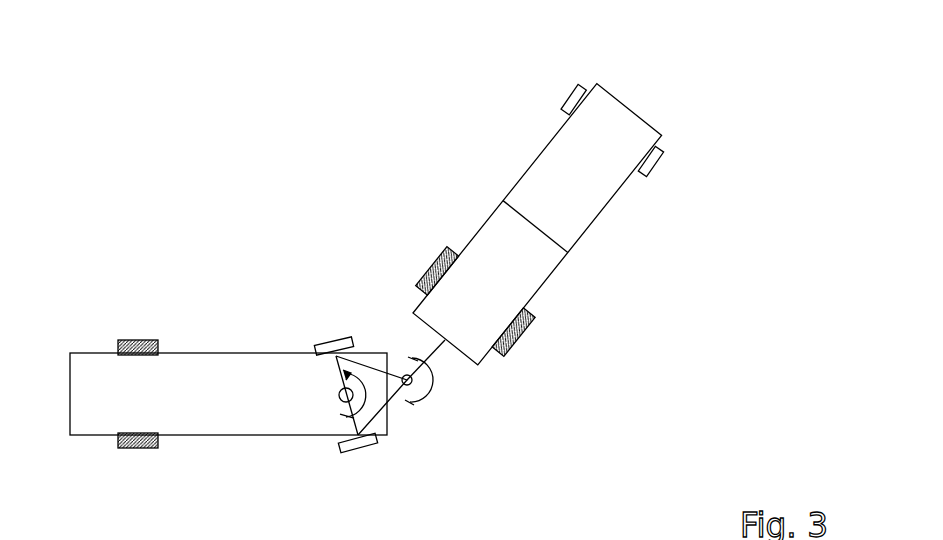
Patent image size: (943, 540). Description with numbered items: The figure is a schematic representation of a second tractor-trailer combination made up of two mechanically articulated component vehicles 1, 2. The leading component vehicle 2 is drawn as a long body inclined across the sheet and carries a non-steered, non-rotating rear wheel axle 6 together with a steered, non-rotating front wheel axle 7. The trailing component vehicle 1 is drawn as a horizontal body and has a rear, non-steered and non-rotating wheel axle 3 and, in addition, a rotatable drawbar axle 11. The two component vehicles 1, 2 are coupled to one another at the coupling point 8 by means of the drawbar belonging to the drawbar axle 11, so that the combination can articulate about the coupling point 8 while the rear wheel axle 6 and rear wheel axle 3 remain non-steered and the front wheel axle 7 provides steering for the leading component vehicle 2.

The trailing component vehicle 1 is at (222, 378).
The leading component vehicle 2 is at (545, 175).
The rear wheel axle 3 is at (138, 337).
The drawbar axle 11 is at (330, 333).
The rear wheel axle 6 is at (528, 345).
The front wheel axle 7 is at (667, 170).
The coupling point 8 is at (423, 403).